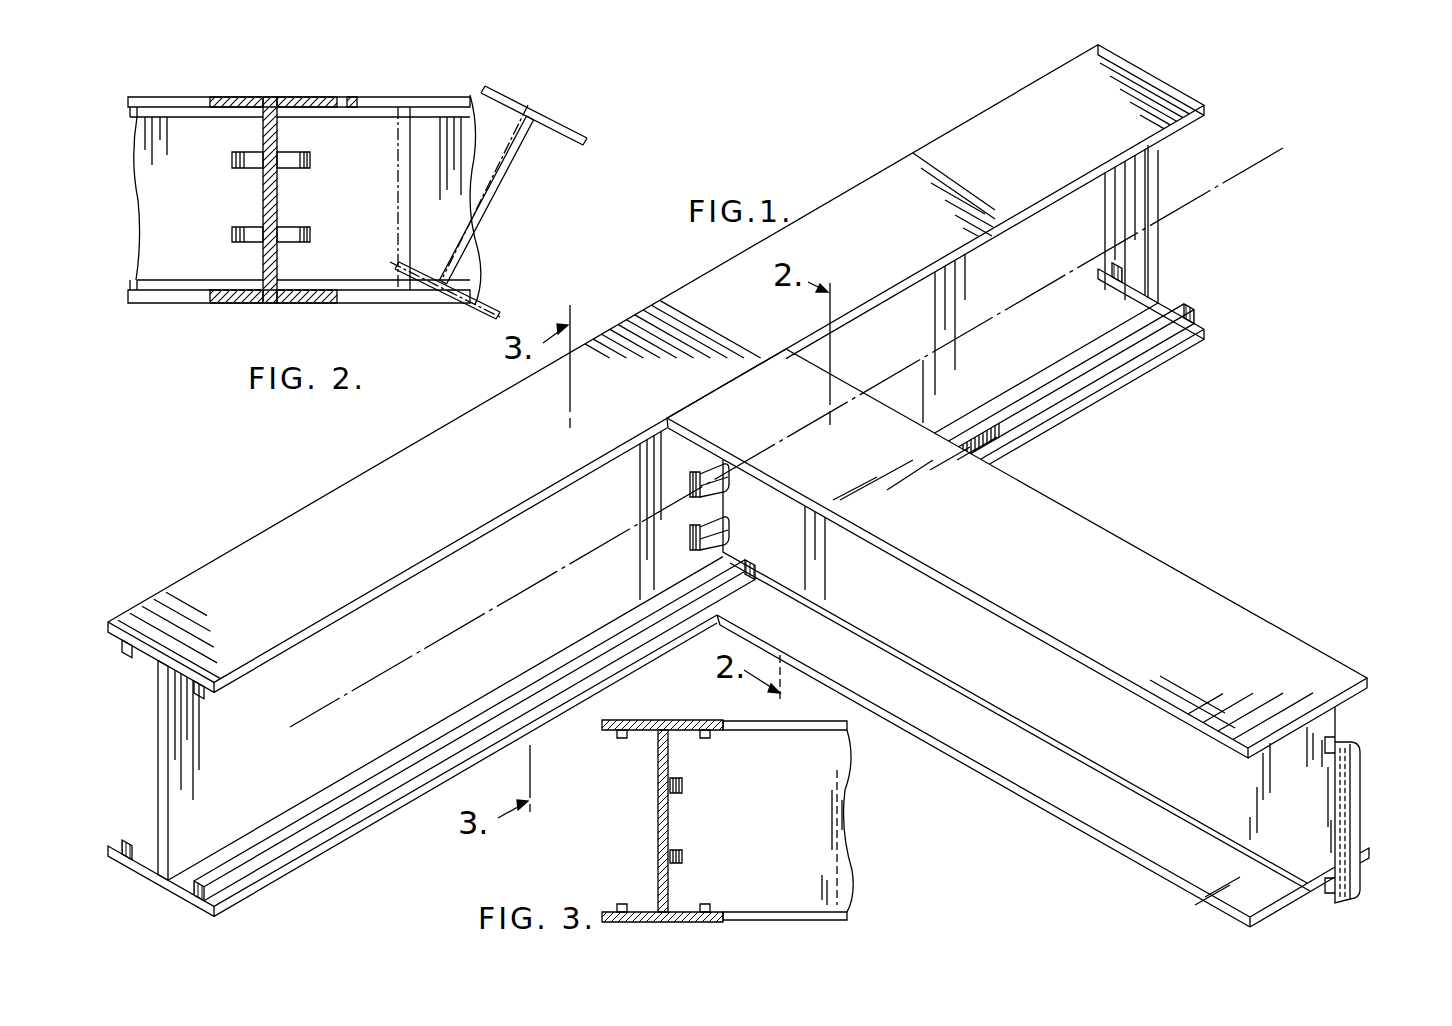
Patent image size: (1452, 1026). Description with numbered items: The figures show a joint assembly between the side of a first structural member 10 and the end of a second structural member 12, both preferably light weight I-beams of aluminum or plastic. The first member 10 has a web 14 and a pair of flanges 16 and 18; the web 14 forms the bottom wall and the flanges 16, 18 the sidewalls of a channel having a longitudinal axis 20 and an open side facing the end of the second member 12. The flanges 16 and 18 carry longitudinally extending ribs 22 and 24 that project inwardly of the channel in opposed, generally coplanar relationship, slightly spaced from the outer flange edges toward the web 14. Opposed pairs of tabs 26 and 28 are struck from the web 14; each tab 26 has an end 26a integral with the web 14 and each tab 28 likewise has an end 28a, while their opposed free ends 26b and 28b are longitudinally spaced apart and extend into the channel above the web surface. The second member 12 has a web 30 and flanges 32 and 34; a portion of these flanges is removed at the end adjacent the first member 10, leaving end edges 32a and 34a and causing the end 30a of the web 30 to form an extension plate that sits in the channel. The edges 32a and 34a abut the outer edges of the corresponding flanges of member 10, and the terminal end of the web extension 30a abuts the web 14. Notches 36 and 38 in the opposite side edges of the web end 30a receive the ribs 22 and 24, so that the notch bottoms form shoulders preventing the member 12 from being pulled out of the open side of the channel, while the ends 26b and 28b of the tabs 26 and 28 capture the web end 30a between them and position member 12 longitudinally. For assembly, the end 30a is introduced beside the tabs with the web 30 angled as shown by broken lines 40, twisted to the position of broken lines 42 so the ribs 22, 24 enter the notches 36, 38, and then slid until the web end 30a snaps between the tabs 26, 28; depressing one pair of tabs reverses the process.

In FIG. 1, the first structural member 10 is at (670, 283).
In FIG. 2, the first structural member 10 is at (418, 96).
In FIG. 3, the first structural member 10 is at (652, 758).
In FIG. 1, the second structural member 12 is at (1131, 522).
In FIG. 2, the second structural member 12 is at (252, 93).
In FIG. 3, the second structural member 12 is at (852, 840).
In FIG. 1, the web 14 is at (160, 752).
In FIG. 2, the web 14 is at (138, 185).
In FIG. 3, the web 14 is at (657, 817).
In FIG. 1, the flange 16 is at (292, 540).
In FIG. 2, the flange 16 is at (150, 97).
In FIG. 3, the flange 16 is at (652, 720).
In FIG. 1, the flange 18 is at (300, 860).
In FIG. 2, the flange 18 is at (168, 304).
In FIG. 3, the flange 18 is at (690, 922).
In FIG. 1, the longitudinal axis 20 is at (1187, 212).
In FIG. 1, the rib 22 is at (205, 686).
In FIG. 2, the rib 22 is at (128, 117).
In FIG. 3, the rib 22 is at (708, 720).
In FIG. 1, the rib 24 is at (200, 893).
In FIG. 2, the rib 24 is at (140, 286).
In FIG. 3, the rib 24 is at (700, 922).
In FIG. 1, the tabs 26 is at (689, 489).
In FIG. 2, the tabs 26 is at (252, 150).
In FIG. 3, the tabs 26 is at (669, 786).
In FIG. 2, the tab end 26a is at (231, 160).
In FIG. 2, the tab end 26b is at (265, 97).
In FIG. 3, the tab end 26b is at (683, 786).
In FIG. 1, the tabs 28 is at (690, 540).
In FIG. 2, the tabs 28 is at (255, 243).
In FIG. 3, the tabs 28 is at (669, 857).
In FIG. 2, the tab end 28a is at (231, 236).
In FIG. 3, the tab end 28b is at (683, 855).
In FIG. 1, the web 30 is at (1150, 776).
In FIG. 2, the web 30 is at (278, 193).
In FIG. 3, the web 30 is at (840, 786).
In FIG. 1, the web end 30a is at (1337, 800).
In FIG. 3, the web end 30a is at (687, 882).
In FIG. 1, the flange 32 is at (1215, 607).
In FIG. 2, the flange 32 is at (300, 97).
In FIG. 3, the flange 32 is at (835, 728).
In FIG. 1, the end edge 32a is at (705, 392).
In FIG. 3, the end edge 32a is at (757, 721).
In FIG. 1, the flange 34 is at (1015, 770).
In FIG. 2, the flange 34 is at (250, 300).
In FIG. 3, the flange 34 is at (835, 915).
In FIG. 1, the end edge 34a is at (720, 622).
In FIG. 3, the end edge 34a is at (735, 918).
In FIG. 1, the notch 36 is at (1335, 738).
In FIG. 3, the notch 36 is at (707, 740).
In FIG. 1, the notch 38 is at (1330, 894).
In FIG. 3, the notch 38 is at (706, 900).
In FIG. 2, the broken lines 40 is at (567, 123).
In FIG. 2, the broken lines 42 is at (413, 157).